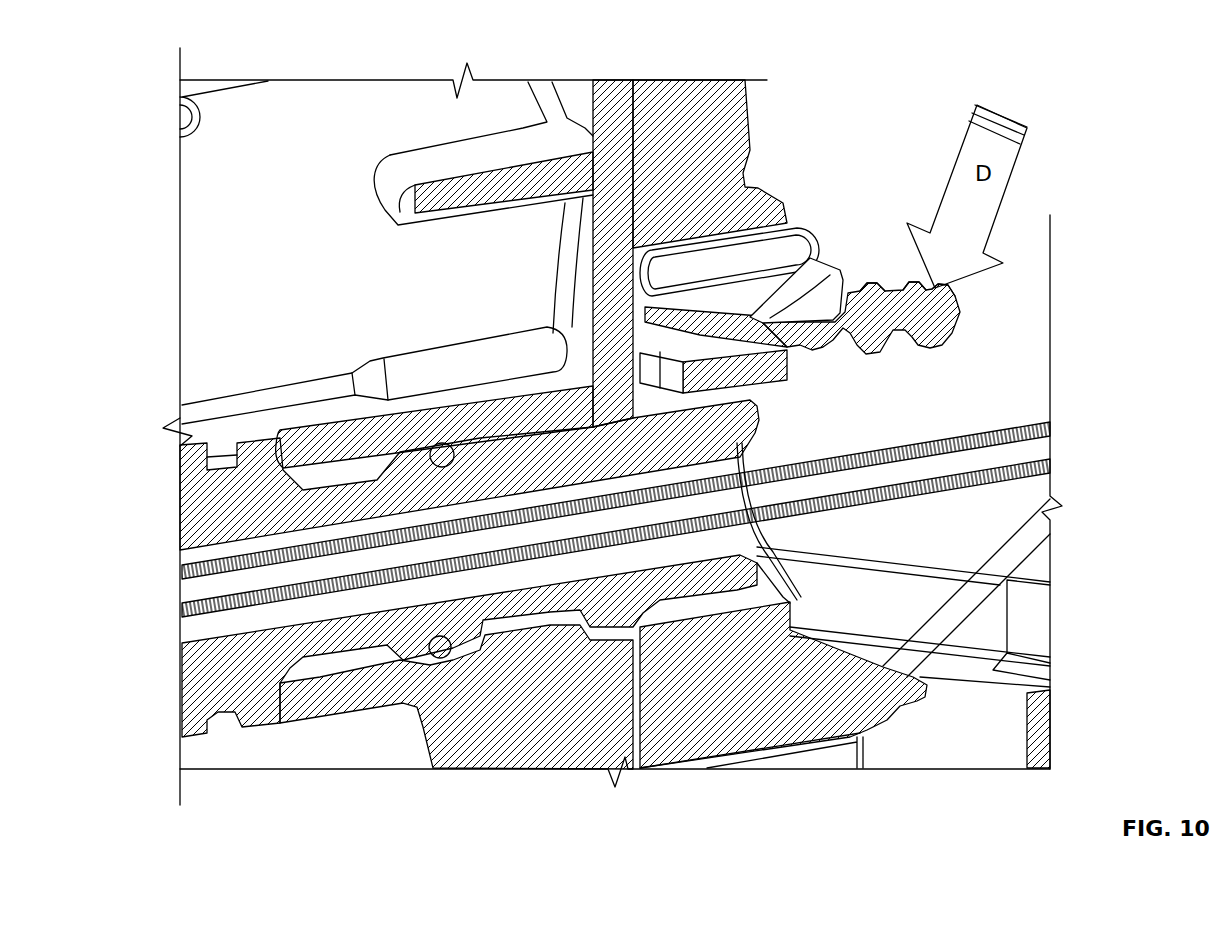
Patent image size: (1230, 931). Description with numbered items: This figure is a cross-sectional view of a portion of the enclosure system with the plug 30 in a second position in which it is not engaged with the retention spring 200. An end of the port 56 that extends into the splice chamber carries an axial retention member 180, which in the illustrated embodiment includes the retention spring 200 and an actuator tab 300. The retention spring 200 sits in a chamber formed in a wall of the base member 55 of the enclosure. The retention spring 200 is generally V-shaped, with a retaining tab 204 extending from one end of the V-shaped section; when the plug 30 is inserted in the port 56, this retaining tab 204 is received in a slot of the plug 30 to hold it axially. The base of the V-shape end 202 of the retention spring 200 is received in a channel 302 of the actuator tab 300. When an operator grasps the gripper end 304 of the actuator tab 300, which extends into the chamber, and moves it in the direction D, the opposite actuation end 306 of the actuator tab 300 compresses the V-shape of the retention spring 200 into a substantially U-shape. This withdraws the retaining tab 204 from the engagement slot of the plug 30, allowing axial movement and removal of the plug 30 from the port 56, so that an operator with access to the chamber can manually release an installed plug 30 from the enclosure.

The axial retention member 180 is at (814, 118).
The retention spring 200 is at (757, 437).
The V-shape end 202 is at (800, 250).
The retaining tab 204 is at (648, 373).
The actuator tab 300 is at (958, 314).
The channel 302 is at (813, 315).
The gripper end 304 is at (933, 290).
The actuation end 306 is at (648, 312).
The plug 30 is at (245, 684).
The base member 55 is at (730, 720).
The port 56 is at (333, 697).